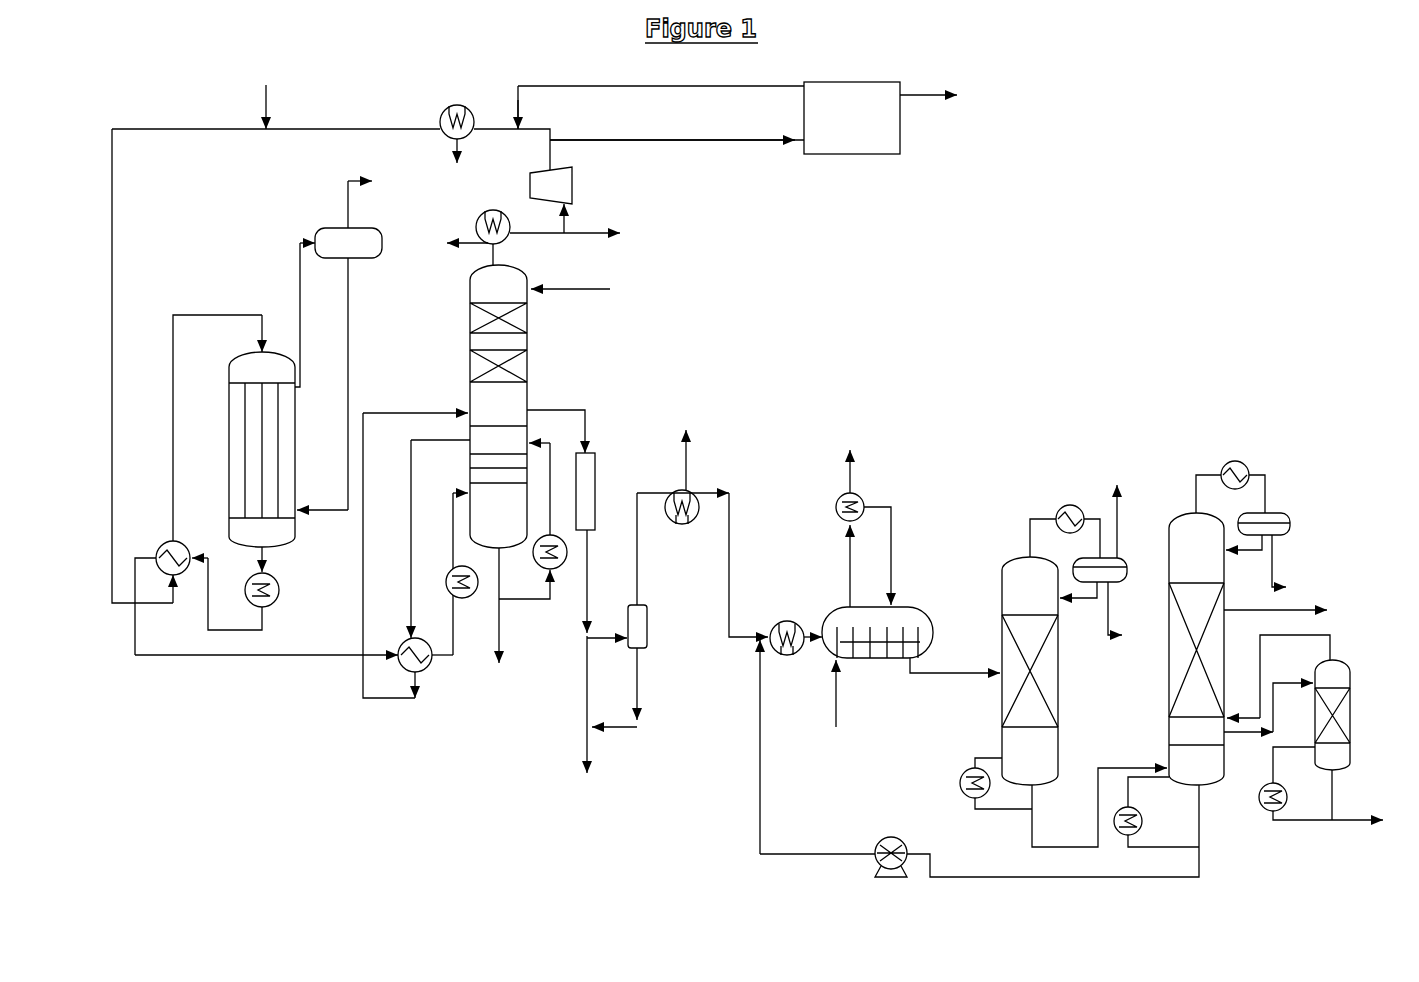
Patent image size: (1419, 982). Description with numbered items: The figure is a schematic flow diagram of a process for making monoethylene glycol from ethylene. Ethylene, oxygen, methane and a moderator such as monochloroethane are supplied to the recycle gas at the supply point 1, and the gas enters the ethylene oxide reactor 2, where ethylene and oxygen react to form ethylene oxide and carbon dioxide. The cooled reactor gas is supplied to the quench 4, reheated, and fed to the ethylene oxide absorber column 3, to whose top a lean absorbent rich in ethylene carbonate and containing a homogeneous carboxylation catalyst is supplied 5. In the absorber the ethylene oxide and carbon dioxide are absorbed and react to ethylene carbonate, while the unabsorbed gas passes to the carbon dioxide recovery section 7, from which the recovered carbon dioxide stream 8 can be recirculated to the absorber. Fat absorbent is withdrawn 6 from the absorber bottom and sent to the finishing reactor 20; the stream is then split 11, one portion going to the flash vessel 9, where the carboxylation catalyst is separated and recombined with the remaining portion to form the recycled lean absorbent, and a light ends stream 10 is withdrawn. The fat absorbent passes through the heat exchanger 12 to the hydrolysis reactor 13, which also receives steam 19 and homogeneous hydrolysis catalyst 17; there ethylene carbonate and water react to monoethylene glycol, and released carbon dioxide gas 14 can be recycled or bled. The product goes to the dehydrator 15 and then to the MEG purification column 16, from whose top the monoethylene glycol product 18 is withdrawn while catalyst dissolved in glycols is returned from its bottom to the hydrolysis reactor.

The recycle gas supply point 1 is at (263, 91).
The ethylene oxide reactor 2 is at (244, 449).
The ethylene oxide absorber column 3 is at (519, 406).
The quench 4 is at (502, 521).
The lean absorbent supply 5 is at (570, 516).
The fat absorbent withdrawal 6 is at (556, 414).
The carbon dioxide recovery section 7 is at (852, 137).
The recovered carbon dioxide stream 8 is at (928, 116).
The flash vessel 9 is at (638, 610).
The light ends stream 10 is at (683, 452).
The fat absorbent stream split 11 is at (584, 613).
The heat exchanger 12 is at (796, 655).
The hydrolysis reactor 13 is at (877, 648).
The released carbon dioxide gas 14 is at (863, 513).
The dehydrator 15 is at (1063, 666).
The monoethylene glycol purification column 16 is at (1202, 654).
The homogeneous hydrolysis catalyst 17 is at (979, 774).
The monoethylene glycol product 18 is at (1300, 597).
The steam 19 is at (831, 712).
The finishing reactor 20 is at (604, 502).